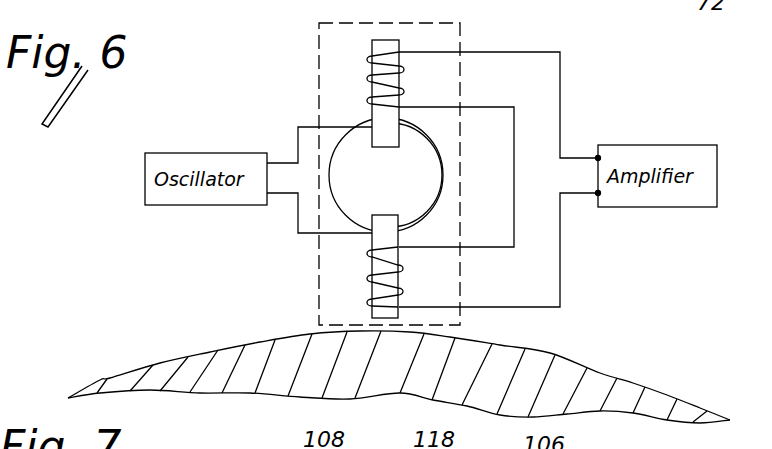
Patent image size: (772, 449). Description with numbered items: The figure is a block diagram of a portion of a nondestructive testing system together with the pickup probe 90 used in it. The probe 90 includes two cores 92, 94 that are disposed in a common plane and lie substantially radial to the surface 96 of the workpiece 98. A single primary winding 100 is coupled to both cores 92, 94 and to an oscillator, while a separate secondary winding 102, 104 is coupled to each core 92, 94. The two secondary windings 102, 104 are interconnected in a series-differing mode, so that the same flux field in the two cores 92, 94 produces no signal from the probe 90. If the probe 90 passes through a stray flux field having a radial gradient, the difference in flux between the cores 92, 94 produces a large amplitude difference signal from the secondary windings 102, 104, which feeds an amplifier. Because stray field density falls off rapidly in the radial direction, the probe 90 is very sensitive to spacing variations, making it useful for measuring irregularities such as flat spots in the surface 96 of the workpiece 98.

The probe 90 is at (462, 33).
The core 92 is at (387, 47).
The core 94 is at (380, 268).
The surface 96 is at (633, 375).
The workpiece 98 is at (572, 394).
The primary winding 100 is at (435, 150).
The secondary winding 102 is at (364, 78).
The secondary winding 104 is at (405, 292).